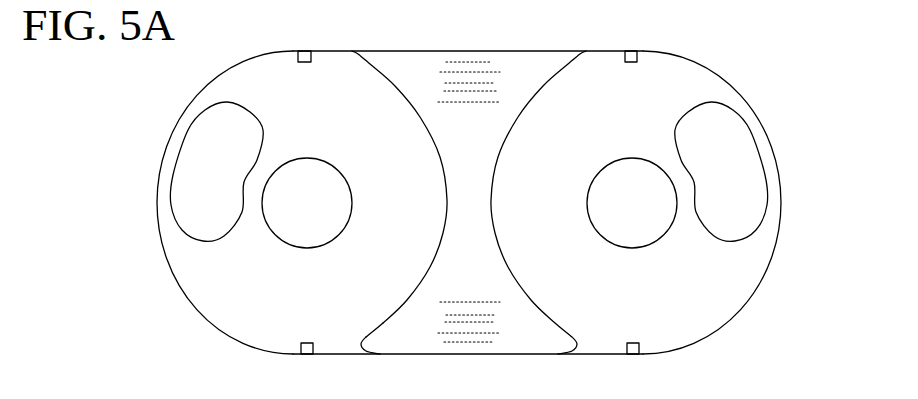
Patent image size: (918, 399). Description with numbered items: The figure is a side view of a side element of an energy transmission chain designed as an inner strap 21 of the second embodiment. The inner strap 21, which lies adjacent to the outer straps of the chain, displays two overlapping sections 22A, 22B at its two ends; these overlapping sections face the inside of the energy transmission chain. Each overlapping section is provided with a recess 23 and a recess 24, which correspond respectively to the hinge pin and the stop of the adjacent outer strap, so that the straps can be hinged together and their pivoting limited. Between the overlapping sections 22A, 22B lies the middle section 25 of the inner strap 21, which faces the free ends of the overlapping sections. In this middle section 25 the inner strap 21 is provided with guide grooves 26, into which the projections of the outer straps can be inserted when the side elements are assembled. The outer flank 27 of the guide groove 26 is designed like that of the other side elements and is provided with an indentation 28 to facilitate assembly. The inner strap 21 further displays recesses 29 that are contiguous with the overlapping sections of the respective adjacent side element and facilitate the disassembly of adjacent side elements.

The inner strap 21 is at (207, 337).
The overlapping section 22A is at (279, 95).
The overlapping section 22B is at (645, 102).
The recess 23 is at (303, 227).
The recess 24 is at (210, 218).
The middle section 25 is at (470, 177).
The guide groove 26 is at (436, 180).
The outer flank 27 is at (372, 346).
The indentation 28 is at (375, 333).
The recess 29 is at (633, 354).